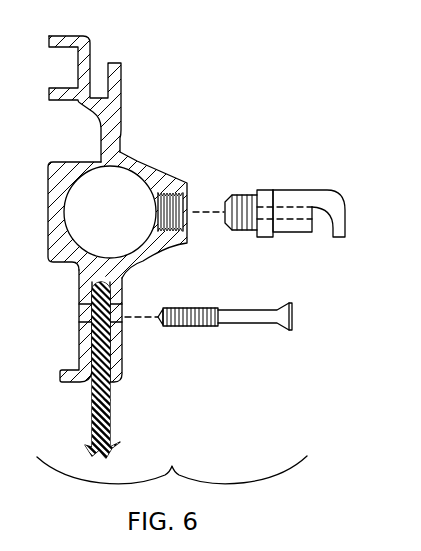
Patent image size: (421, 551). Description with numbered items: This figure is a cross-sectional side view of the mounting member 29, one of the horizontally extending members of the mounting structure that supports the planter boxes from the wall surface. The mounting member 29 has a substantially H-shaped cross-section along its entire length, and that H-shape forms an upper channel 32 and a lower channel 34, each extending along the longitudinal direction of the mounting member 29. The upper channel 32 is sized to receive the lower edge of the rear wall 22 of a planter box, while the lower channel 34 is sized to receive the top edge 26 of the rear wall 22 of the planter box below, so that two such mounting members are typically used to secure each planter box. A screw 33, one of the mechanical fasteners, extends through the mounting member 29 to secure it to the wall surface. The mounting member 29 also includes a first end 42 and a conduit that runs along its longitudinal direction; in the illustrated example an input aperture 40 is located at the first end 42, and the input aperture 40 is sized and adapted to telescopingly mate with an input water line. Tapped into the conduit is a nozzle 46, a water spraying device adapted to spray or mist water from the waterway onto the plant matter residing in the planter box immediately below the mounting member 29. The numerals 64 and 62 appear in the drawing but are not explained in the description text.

The mounting member 29 is at (162, 76).
The upper channel 32 is at (98, 70).
The input aperture 40 is at (98, 197).
The first end 42 is at (62, 187).
The hub wall 64 is at (50, 238).
The top edge 26 is at (113, 268).
The nozzle 46 is at (322, 200).
The screw 33 is at (242, 316).
The lower channel 34 is at (110, 355).
The lower sleeve 62 is at (122, 370).
The rear wall 22 is at (110, 415).